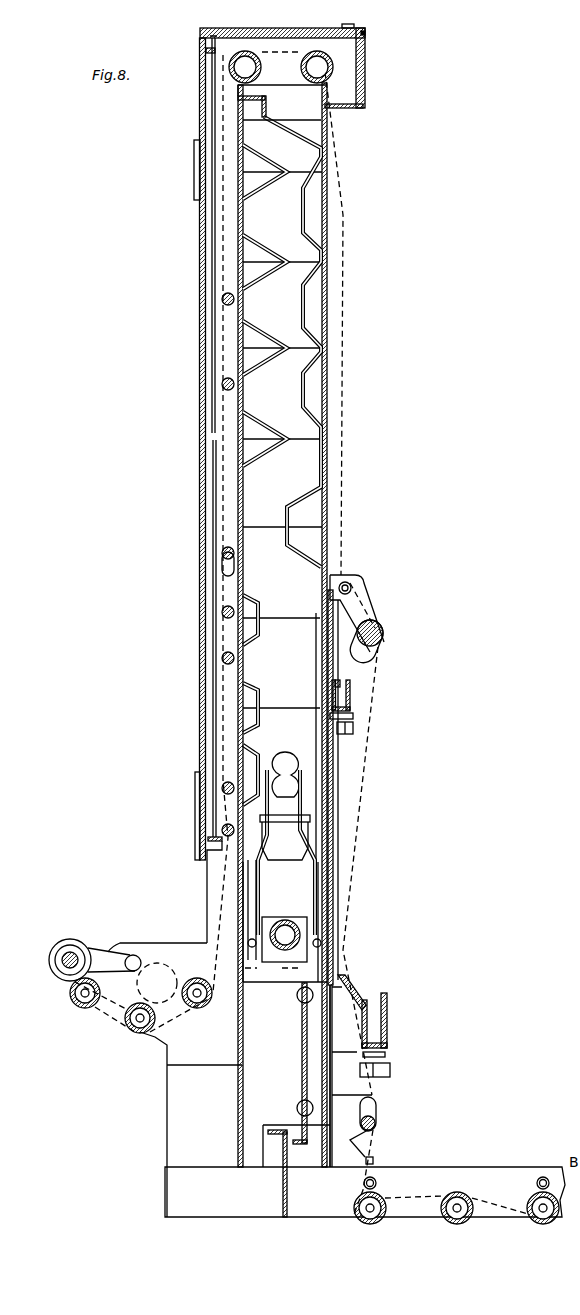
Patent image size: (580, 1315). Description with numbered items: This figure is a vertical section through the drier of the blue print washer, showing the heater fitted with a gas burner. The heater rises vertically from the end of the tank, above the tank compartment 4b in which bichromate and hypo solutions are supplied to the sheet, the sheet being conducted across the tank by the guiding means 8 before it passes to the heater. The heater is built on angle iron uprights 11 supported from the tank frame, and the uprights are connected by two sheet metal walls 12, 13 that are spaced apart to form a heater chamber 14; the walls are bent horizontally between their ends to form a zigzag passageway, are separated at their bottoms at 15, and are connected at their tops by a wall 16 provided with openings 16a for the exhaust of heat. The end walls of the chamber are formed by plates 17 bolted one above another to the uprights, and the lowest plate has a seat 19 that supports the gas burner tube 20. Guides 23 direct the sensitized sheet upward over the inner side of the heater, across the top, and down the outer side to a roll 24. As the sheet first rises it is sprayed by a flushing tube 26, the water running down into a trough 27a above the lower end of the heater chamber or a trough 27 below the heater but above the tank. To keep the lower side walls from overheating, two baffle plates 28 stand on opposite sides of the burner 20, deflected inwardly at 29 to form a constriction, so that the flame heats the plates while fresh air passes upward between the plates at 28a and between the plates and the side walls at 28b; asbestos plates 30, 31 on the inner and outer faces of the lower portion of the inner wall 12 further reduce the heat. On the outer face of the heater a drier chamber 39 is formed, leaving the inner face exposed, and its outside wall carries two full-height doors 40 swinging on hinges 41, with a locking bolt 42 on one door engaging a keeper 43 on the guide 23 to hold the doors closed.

The guiding means 8 is at (383, 1200).
The tank compartment 4b is at (497, 1200).
The angle iron uprights 11 is at (322, 1147).
The inner wall 12 is at (307, 303).
The wall 13 is at (240, 213).
The heater chamber 14 is at (287, 213).
The separation at bottom of walls 15 is at (266, 970).
The top wall 16 is at (266, 98).
The openings 16a is at (252, 90).
The plates 17 is at (250, 127).
The seat 19 is at (265, 950).
The gas burner tube 20 is at (283, 917).
The guides 23 is at (229, 67).
The roll 24 is at (150, 962).
The flushing tube 26 is at (357, 583).
The trough 27 is at (372, 1010).
The trough 27a is at (350, 697).
The baffle plates 28 is at (280, 770).
The space between baffle plates 28a is at (283, 793).
The space between side walls and baffle plates 28b is at (312, 810).
The inward deflection 29 is at (263, 845).
The asbestos plate 30 is at (322, 752).
The asbestos plate 31 is at (335, 850).
The drier chamber 39 is at (212, 325).
The doors 40 is at (206, 715).
The hinges 41 is at (196, 176).
The locking bolt 42 is at (218, 747).
The keeper 43 is at (207, 845).